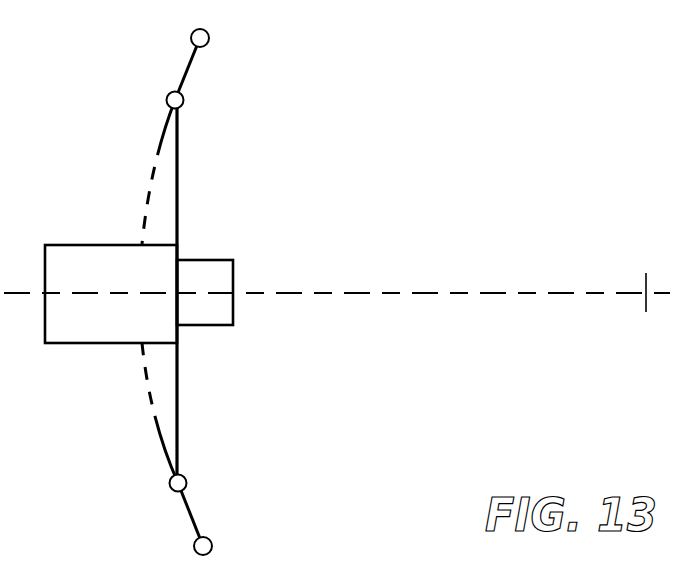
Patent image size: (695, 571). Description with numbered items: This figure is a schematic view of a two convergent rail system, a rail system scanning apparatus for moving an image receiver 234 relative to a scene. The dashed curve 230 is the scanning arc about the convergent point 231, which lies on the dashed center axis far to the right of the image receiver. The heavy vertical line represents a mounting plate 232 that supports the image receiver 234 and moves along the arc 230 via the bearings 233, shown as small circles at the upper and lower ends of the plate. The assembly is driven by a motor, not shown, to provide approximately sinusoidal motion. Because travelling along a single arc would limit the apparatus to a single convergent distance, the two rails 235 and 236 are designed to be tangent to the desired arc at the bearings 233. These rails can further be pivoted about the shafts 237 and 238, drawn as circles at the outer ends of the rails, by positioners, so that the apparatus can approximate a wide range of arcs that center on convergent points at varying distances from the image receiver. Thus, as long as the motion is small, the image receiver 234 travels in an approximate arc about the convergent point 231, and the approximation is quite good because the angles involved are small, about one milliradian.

The scanning arc 230 is at (142, 355).
The convergent point 231 is at (643, 295).
The mounting plate 232 is at (178, 380).
The bearings 233 is at (185, 105).
The image receiver 234 is at (88, 242).
The rail 235 is at (182, 76).
The rail 236 is at (183, 508).
The shaft 237 is at (210, 37).
The shaft 238 is at (212, 543).